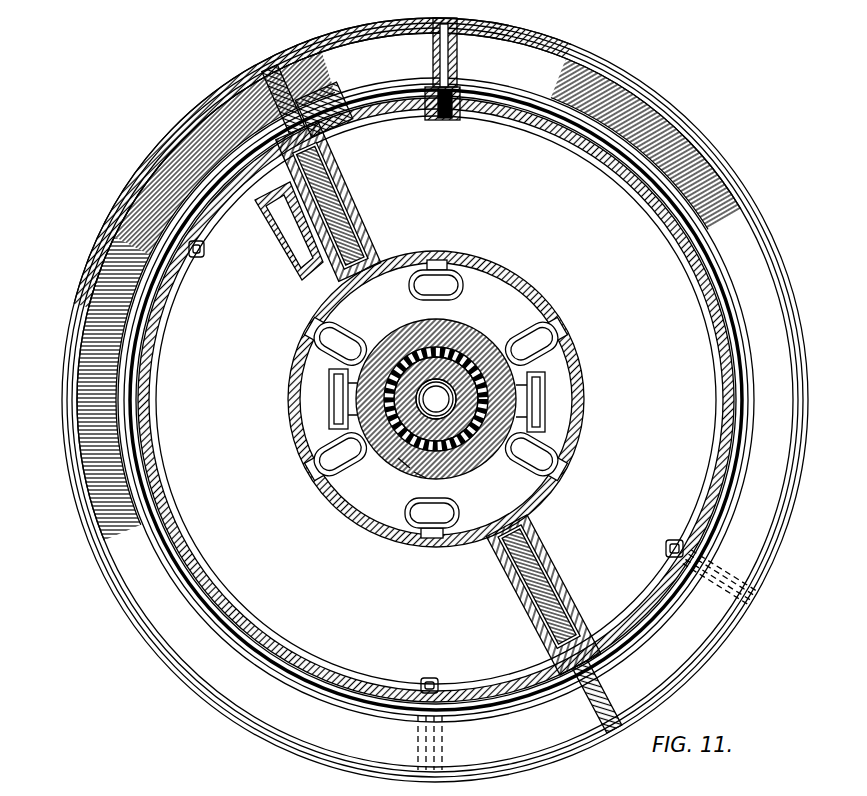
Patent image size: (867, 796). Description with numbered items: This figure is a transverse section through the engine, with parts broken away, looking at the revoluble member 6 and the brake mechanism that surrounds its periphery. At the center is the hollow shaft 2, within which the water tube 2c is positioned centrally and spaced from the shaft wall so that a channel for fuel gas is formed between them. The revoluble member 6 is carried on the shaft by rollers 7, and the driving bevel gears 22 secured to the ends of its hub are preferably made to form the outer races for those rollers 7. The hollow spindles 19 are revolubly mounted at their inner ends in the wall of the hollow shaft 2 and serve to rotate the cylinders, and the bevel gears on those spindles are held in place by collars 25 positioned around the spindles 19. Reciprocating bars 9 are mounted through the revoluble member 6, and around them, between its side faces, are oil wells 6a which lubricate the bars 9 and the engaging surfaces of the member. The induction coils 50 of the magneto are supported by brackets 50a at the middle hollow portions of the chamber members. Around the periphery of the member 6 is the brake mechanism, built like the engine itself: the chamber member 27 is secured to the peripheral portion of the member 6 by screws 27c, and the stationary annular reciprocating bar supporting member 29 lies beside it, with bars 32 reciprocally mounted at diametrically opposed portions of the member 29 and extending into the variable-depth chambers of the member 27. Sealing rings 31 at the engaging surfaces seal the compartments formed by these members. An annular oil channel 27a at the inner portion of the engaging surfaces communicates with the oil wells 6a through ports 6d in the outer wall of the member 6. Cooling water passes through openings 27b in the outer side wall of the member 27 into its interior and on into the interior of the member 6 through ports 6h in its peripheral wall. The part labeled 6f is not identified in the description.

The hollow shaft 2 is at (425, 345).
The water tube 2c is at (418, 472).
The revoluble member 6 is at (710, 311).
The oil wells 6a is at (348, 200).
The ports 6d is at (300, 138).
The bracket 6f is at (298, 263).
The ports 6h is at (424, 97).
The rollers 7 is at (458, 333).
The reciprocating bars 9 is at (358, 224).
The hollow spindles 19 is at (520, 395).
The driving bevel gears 22 is at (470, 338).
The collars 25 is at (530, 403).
The chamber member 27 is at (550, 50).
The annular oil channel 27a is at (338, 112).
The openings 27b is at (511, 95).
The screws 27c is at (478, 26).
The reciprocating bar supporting member 29 is at (403, 460).
The sealing rings 31 is at (708, 152).
The bars 32 is at (243, 90).
The induction coils 50 is at (468, 272).
The brackets 50a is at (470, 262).